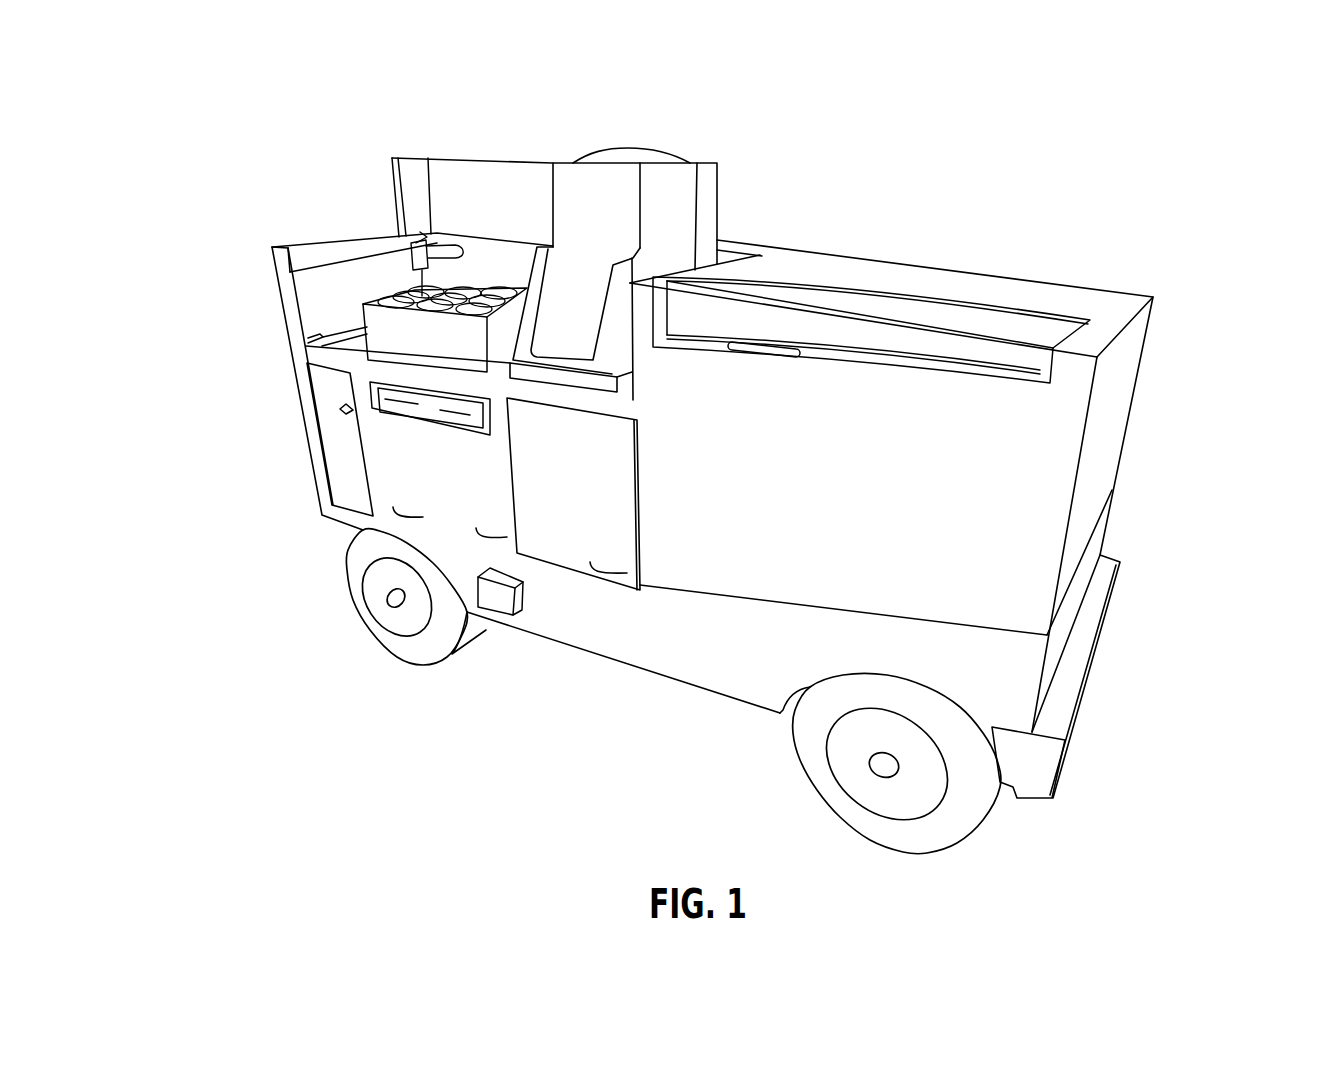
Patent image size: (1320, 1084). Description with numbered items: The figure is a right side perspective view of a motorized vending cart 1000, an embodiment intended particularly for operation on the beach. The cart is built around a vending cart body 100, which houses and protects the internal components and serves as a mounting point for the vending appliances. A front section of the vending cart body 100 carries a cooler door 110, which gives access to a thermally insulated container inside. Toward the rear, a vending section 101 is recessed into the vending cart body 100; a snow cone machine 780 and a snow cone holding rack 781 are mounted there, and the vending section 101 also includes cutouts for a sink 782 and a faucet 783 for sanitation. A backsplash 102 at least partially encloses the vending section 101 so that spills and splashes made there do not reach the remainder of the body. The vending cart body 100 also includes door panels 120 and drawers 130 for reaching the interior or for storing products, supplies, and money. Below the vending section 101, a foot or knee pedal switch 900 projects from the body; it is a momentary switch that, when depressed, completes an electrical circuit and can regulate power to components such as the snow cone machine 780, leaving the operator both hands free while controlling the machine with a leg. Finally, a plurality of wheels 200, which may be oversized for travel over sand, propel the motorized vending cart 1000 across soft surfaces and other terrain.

The motorized vending cart 1000 is at (1160, 224).
The vending cart body 100 is at (1135, 407).
The vending section 101 is at (310, 300).
The backsplash 102 is at (410, 157).
The cooler door 110 is at (845, 297).
The door panels 120 is at (322, 402).
The drawers 130 is at (417, 416).
The wheels 200 is at (403, 660).
The snow cone machine 780 is at (630, 148).
The snow cone holding rack 781 is at (472, 283).
The sink 782 is at (322, 340).
The faucet 783 is at (407, 253).
The foot or knee pedal switch 900 is at (500, 603).